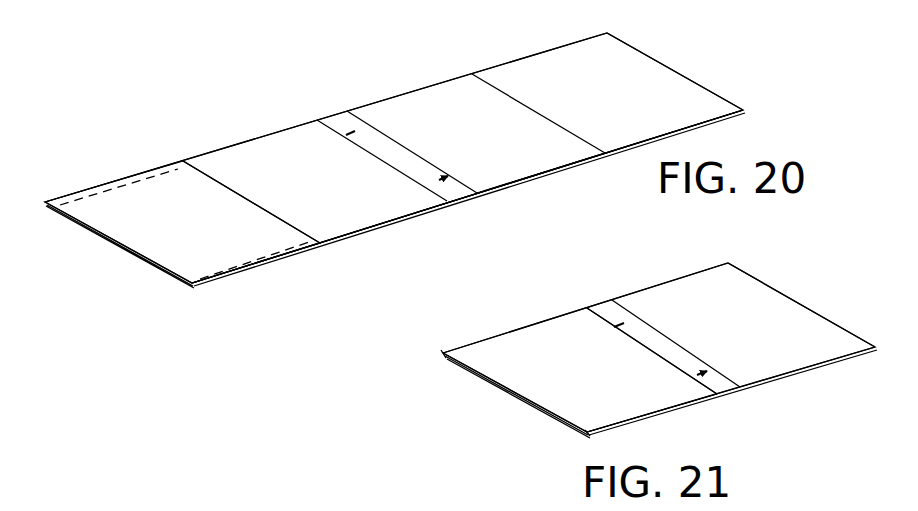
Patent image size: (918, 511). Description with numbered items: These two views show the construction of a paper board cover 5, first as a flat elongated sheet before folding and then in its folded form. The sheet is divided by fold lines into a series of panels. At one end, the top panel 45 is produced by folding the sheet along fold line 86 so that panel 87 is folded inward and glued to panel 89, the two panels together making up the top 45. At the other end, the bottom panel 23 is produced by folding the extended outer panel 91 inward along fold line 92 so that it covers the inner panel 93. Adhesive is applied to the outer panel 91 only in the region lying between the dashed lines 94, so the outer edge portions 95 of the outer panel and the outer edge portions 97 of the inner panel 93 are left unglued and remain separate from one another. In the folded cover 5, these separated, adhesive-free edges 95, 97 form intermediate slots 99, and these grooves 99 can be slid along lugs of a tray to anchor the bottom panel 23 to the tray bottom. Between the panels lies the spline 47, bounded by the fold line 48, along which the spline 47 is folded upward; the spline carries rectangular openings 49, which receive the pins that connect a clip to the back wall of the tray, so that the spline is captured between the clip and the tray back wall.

In FIG. 20, the paper board cover 5 is at (503, 205).
In FIG. 21, the paper board cover 5 is at (762, 396).
In FIG. 20, the panel 23 is at (322, 247).
In FIG. 21, the panel 23 is at (548, 320).
In FIG. 20, the top panel 45 is at (612, 160).
In FIG. 21, the top panel 45 is at (820, 367).
In FIG. 20, the spline 47 is at (340, 135).
In FIG. 21, the spline 47 is at (605, 318).
In FIG. 21, the fold line 48 is at (633, 340).
In FIG. 20, the rectangular openings 49 is at (441, 179).
In FIG. 21, the rectangular openings 49 is at (622, 326).
In FIG. 20, the fold line 86 is at (553, 121).
In FIG. 21, the fold line 86 is at (814, 313).
In FIG. 20, the panel 87 is at (713, 117).
In FIG. 20, the panel 89 is at (532, 155).
In FIG. 20, the extended panel 91 is at (133, 228).
In FIG. 20, the fold line 92 is at (293, 222).
In FIG. 21, the fold line 92 is at (515, 393).
In FIG. 20, the inner panel 93 is at (258, 136).
In FIG. 20, the dashed lines 94 is at (135, 173).
In FIG. 20, the outer edge portions 95 is at (247, 267).
In FIG. 21, the outer edge portions 95 is at (645, 410).
In FIG. 20, the outer edge portions 97 is at (425, 200).
In FIG. 21, the outer edge portions 97 is at (655, 409).
In FIG. 21, the intermediate slots 99 is at (440, 357).